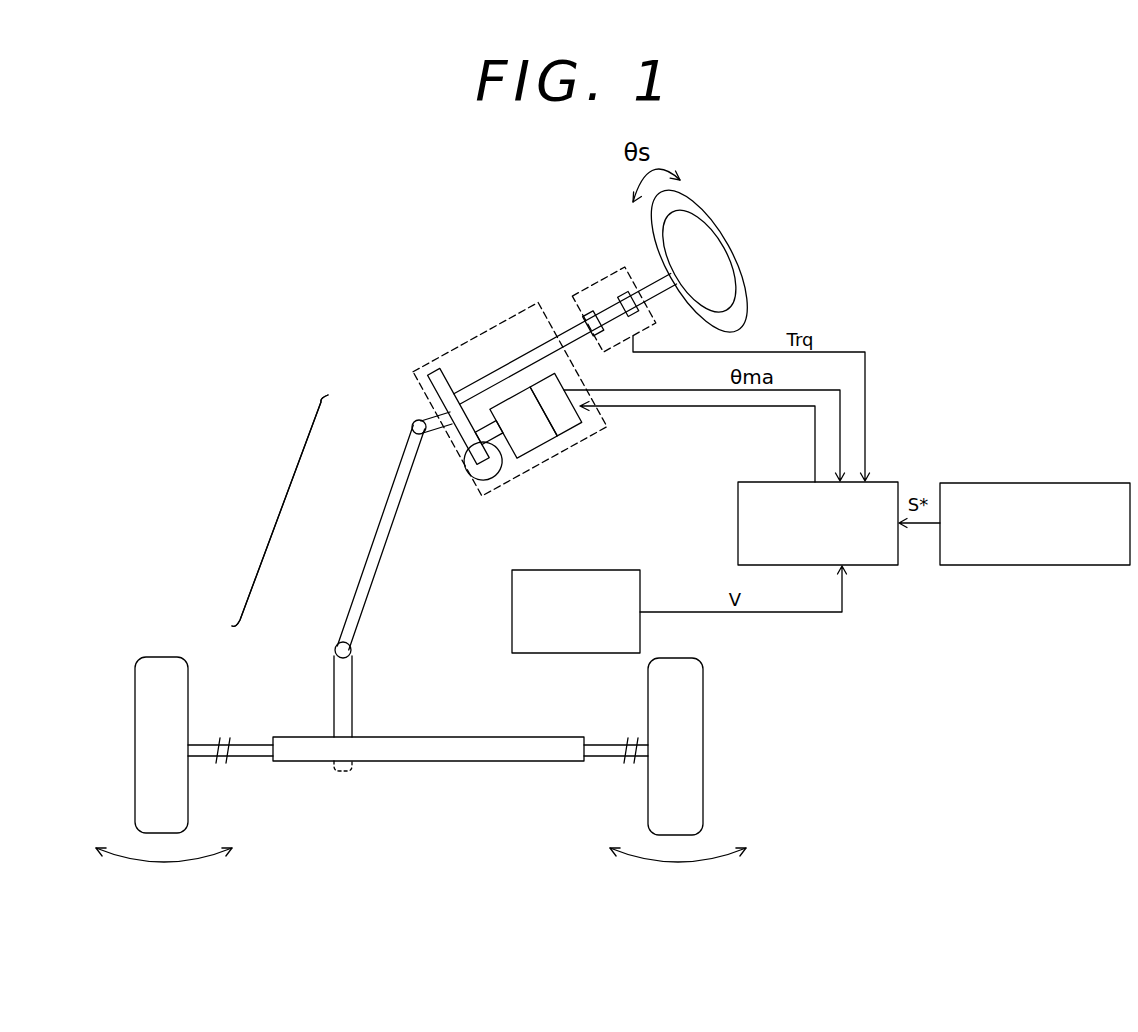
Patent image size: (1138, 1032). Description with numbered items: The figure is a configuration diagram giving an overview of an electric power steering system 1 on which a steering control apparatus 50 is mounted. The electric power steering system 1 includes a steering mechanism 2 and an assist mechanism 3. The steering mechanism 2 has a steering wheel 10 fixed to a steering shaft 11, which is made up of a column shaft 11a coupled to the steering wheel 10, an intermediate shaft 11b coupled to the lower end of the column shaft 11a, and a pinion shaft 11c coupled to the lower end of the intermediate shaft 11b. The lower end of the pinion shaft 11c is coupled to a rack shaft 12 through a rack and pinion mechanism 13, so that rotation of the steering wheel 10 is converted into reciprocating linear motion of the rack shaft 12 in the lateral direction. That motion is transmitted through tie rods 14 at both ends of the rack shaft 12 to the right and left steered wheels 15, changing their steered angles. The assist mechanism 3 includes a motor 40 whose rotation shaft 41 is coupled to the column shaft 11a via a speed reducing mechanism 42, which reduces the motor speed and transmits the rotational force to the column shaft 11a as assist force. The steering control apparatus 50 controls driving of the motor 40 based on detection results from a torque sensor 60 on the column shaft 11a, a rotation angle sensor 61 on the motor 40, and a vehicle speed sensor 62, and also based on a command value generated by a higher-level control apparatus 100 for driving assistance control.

The electric power steering system 1 is at (192, 262).
The steering mechanism 2 is at (231, 425).
The assist mechanism 3 is at (465, 343).
The steering wheel 10 is at (738, 268).
The steering shaft 11 is at (279, 503).
The column shaft 11a is at (412, 426).
The intermediate shaft 11b is at (378, 527).
The pinion shaft 11c is at (331, 665).
The rack shaft 12 is at (505, 762).
The rack and pinion mechanism 13 is at (312, 726).
The tie rods 14 is at (257, 762).
The steered wheels 15 is at (134, 745).
The motor 40 is at (536, 455).
The rotation shaft 41 is at (482, 484).
The speed reducing mechanism 42 is at (463, 465).
The steering control apparatus 50 is at (760, 482).
The torque sensor 60 is at (611, 274).
The rotation angle sensor 61 is at (576, 428).
The vehicle speed sensor 62 is at (602, 570).
The higher-level control apparatus 100 is at (1030, 483).